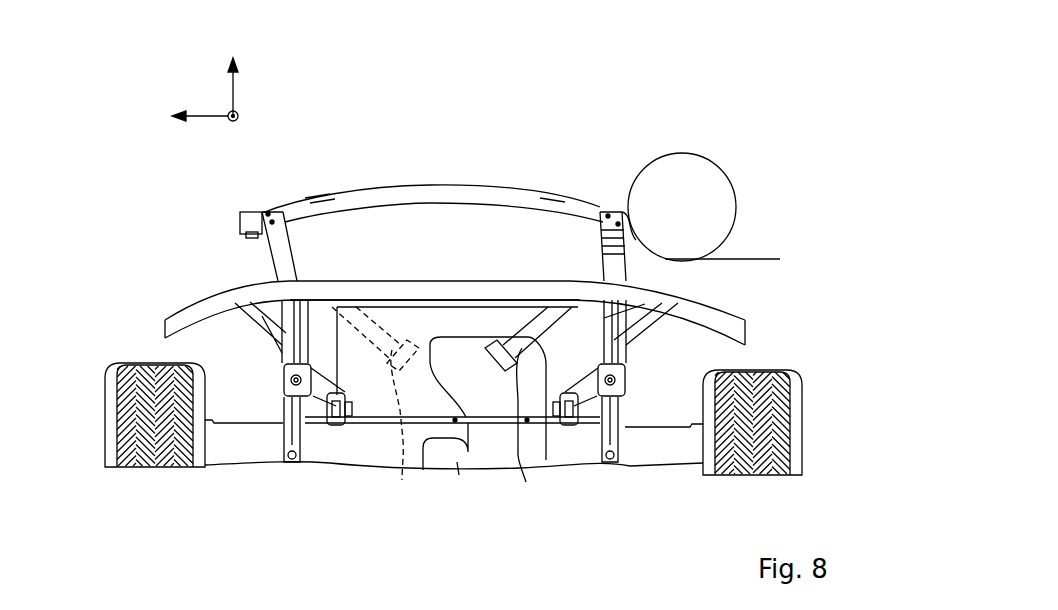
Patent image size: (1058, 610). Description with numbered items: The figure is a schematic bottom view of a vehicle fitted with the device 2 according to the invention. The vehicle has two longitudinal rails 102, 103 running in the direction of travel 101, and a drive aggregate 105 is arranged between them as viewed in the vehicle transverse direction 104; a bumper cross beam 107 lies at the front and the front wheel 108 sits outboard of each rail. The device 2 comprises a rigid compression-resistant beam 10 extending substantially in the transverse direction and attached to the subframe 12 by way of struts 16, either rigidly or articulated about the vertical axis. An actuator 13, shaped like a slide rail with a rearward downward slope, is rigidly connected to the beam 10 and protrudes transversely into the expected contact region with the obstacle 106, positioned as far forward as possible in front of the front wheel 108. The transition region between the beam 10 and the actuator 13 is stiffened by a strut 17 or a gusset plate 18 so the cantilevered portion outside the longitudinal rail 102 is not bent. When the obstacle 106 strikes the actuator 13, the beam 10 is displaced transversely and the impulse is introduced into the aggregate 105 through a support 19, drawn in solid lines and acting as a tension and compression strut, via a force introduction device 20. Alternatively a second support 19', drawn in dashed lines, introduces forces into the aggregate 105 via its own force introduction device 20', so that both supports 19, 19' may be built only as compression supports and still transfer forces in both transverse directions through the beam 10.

The device 2 is at (228, 279).
The compression-resistant beam 10 is at (440, 298).
The subframe 12 is at (628, 372).
The actuator 13 is at (178, 315).
The struts 16 is at (283, 350).
The strut 17 is at (262, 318).
The gusset plate 18 is at (648, 323).
The support 19 is at (528, 304).
The second support 19' is at (375, 303).
The force introduction device 20 is at (531, 426).
The second force introduction device 20' is at (396, 427).
The direction of travel 101 is at (238, 88).
The longitudinal rail 102 is at (318, 303).
The longitudinal rail 103 is at (596, 305).
The vehicle transverse direction 104 is at (205, 118).
The drive aggregate 105 is at (458, 460).
The obstacle 106 is at (722, 200).
The bumper cross beam 107 is at (440, 195).
The front wheel 108 is at (123, 418).